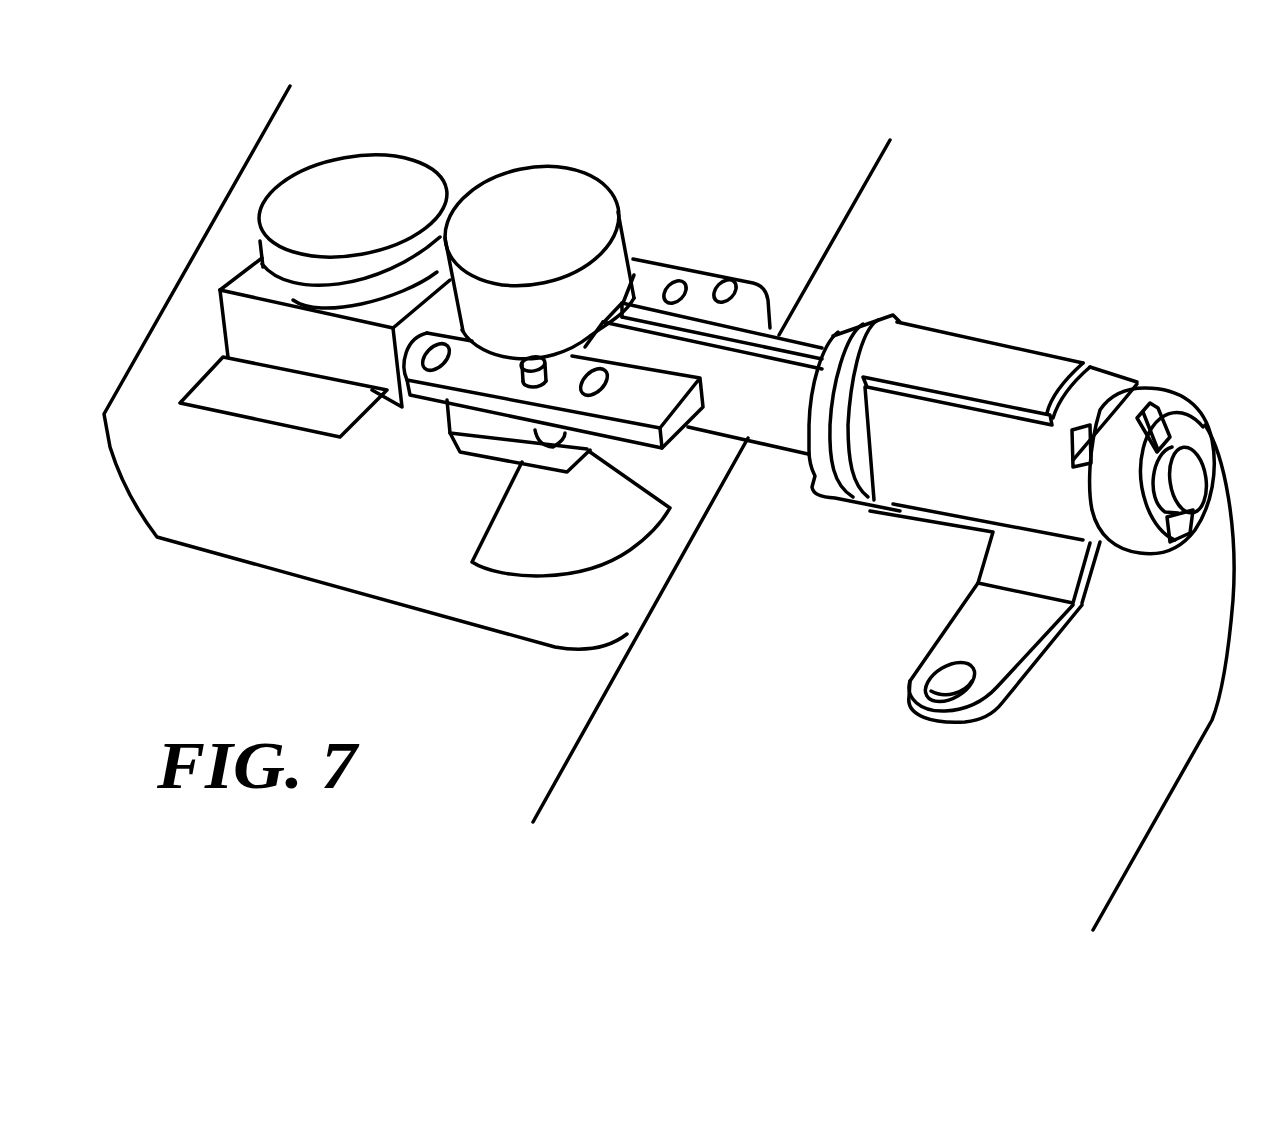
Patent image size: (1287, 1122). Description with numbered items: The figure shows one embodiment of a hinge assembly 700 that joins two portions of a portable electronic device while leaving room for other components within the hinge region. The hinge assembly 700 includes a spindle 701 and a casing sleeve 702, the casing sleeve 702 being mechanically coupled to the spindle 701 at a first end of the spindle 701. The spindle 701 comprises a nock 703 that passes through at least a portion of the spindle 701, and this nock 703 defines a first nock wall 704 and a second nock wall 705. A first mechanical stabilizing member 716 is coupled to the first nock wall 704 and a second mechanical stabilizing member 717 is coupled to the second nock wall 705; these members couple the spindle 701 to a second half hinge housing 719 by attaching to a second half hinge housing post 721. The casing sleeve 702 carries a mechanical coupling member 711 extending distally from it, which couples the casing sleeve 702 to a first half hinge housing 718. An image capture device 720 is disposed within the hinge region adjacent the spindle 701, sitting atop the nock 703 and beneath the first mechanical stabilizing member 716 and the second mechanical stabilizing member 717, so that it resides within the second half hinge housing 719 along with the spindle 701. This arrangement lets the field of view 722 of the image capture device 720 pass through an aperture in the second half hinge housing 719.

The hinge assembly 700 is at (1012, 316).
The spindle 701 is at (953, 463).
The casing sleeve 702 is at (946, 355).
The nock 703 is at (782, 336).
The first nock wall 704 is at (758, 423).
The second nock wall 705 is at (775, 333).
The mechanical coupling member 711 is at (1003, 630).
The first mechanical stabilizing member 716 is at (647, 400).
The second mechanical stabilizing member 717 is at (705, 282).
The first half hinge housing 718 is at (1160, 725).
The second half hinge housing 719 is at (292, 137).
The image capture device 720 is at (480, 430).
The second half hinge housing post 721 is at (558, 213).
The field of view 722 is at (570, 578).